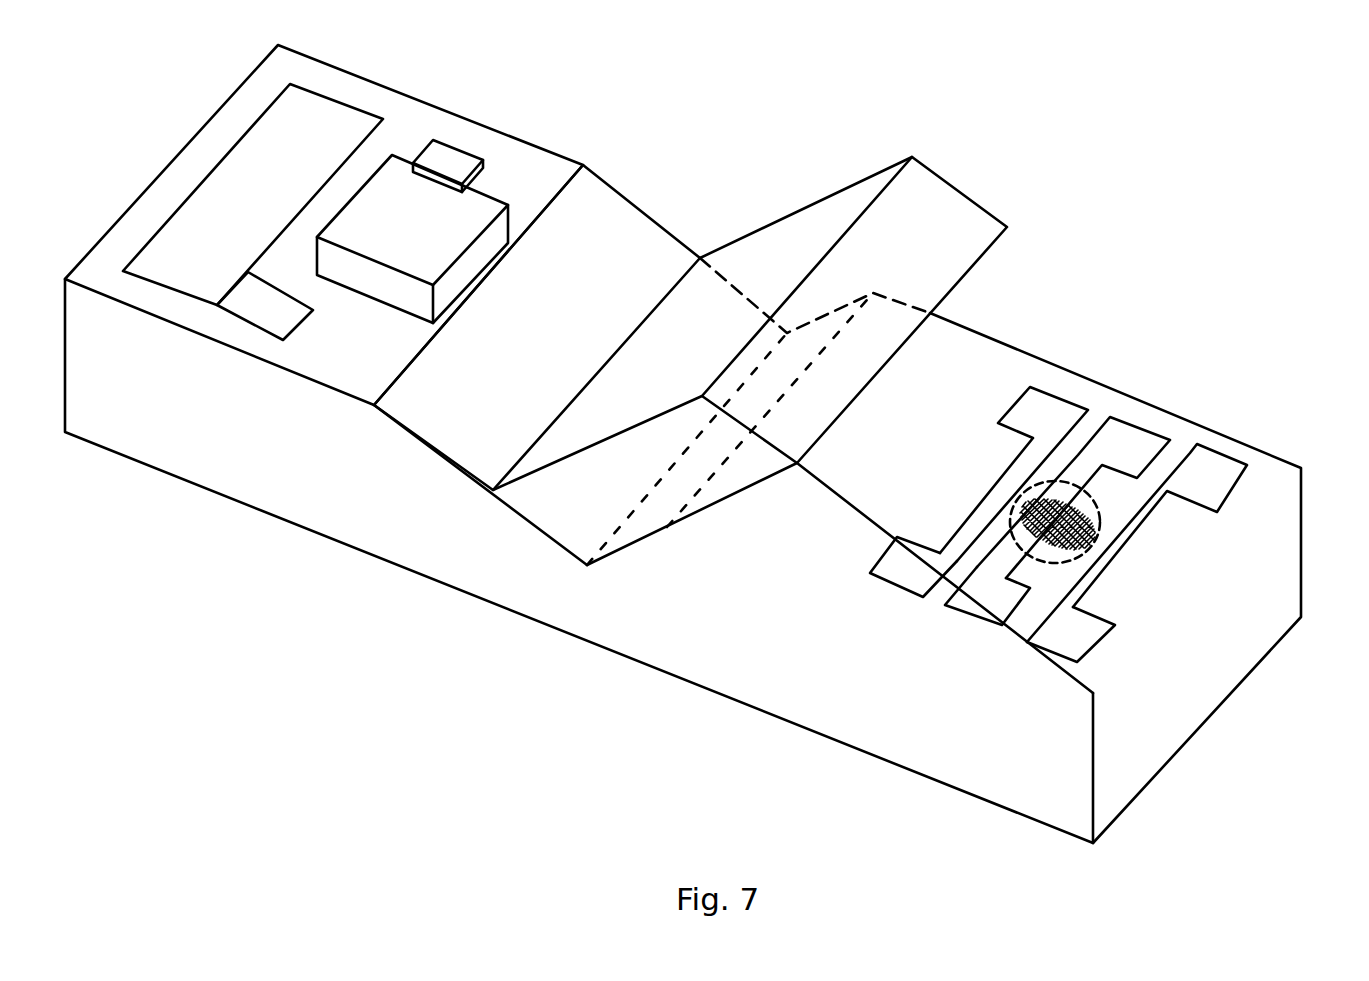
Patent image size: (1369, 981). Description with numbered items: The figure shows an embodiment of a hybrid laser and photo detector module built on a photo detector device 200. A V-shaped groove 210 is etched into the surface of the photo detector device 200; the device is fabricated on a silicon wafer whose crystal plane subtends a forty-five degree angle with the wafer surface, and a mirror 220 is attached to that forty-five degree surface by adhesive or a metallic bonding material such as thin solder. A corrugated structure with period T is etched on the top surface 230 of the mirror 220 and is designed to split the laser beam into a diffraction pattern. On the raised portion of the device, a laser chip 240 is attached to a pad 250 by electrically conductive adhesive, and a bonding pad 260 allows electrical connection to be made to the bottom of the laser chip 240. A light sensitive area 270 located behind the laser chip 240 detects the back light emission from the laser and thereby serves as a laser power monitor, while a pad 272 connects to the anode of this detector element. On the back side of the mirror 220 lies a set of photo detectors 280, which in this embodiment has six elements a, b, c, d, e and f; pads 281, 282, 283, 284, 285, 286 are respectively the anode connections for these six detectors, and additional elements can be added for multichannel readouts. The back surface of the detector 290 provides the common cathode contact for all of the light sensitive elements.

The photo detector device 200 is at (1198, 190).
The V-shaped groove 210 is at (657, 224).
The mirror 220 is at (923, 160).
The top surface of the mirror 230 is at (600, 445).
The laser chip 240 is at (460, 247).
The pad 250 is at (362, 310).
The bonding pad 260 is at (440, 157).
The light sensitive area 270 is at (183, 250).
The pad 272 is at (261, 303).
The set of photo detectors 280 is at (1175, 443).
The pad 281 is at (1220, 484).
The pad 282 is at (1110, 438).
The pad 283 is at (1043, 411).
The pad 284 is at (903, 540).
The pad 285 is at (967, 608).
The pad 286 is at (1064, 640).
The back surface of the detector 290 is at (629, 661).